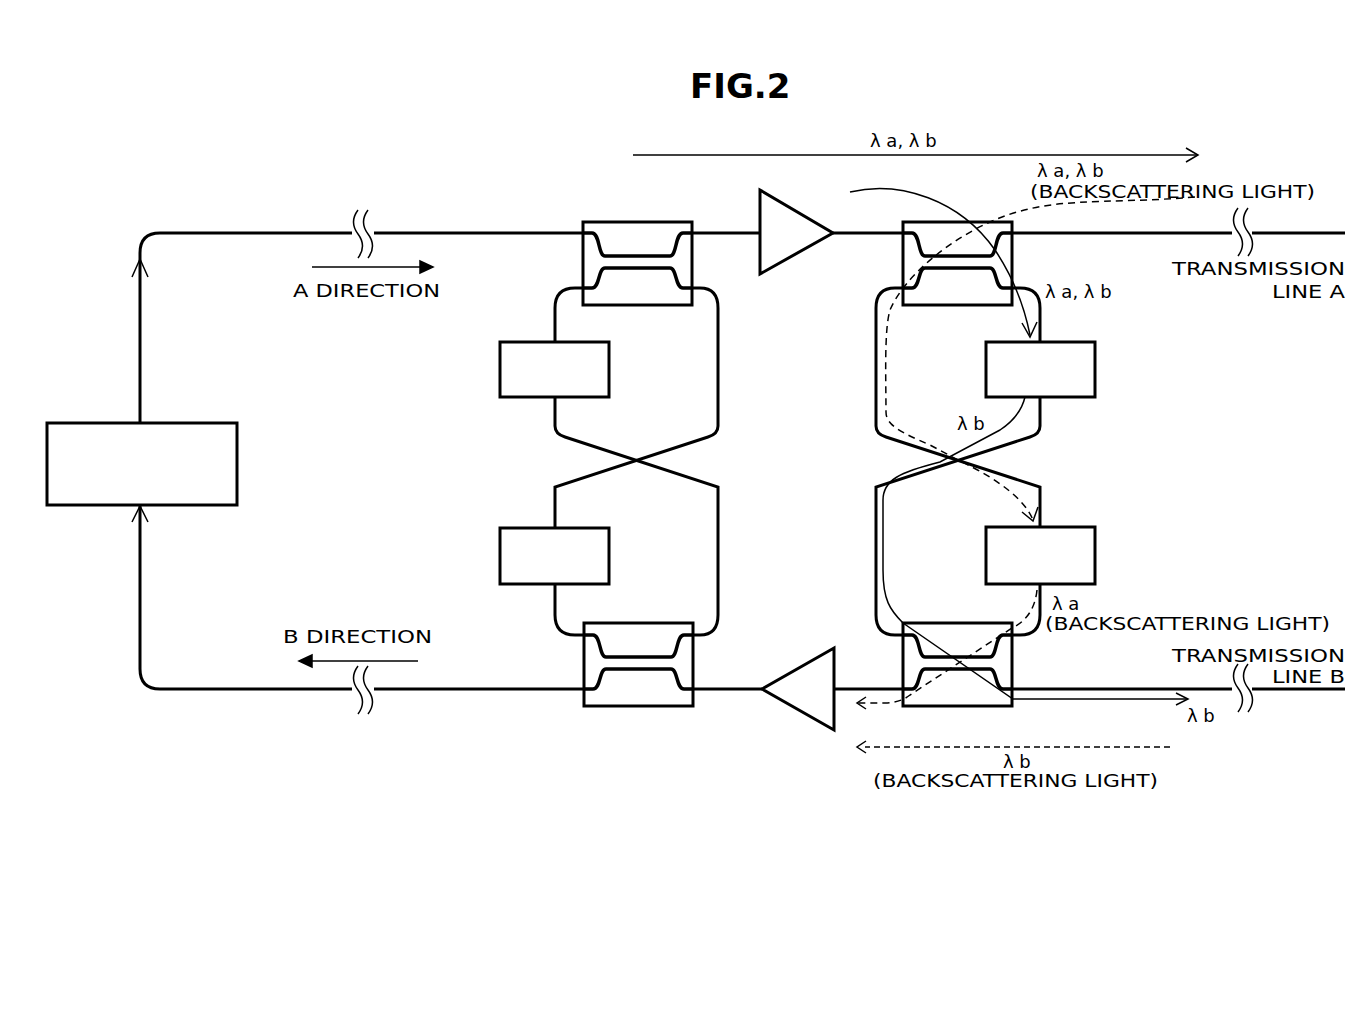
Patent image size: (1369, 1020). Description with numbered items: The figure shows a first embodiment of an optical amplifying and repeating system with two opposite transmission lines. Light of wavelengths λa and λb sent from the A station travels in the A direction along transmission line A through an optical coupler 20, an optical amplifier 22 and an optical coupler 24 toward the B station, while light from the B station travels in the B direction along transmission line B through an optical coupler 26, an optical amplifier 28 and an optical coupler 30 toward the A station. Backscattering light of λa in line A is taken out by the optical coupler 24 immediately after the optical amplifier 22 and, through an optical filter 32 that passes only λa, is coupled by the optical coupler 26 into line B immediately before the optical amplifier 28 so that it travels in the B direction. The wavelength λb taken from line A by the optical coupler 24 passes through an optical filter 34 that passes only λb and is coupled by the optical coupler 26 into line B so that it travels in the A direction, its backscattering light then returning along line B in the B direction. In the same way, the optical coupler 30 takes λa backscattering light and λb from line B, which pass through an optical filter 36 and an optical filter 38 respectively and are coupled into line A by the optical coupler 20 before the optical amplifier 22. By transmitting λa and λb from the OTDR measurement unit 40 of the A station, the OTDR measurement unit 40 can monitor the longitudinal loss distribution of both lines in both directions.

The optical coupler 20 is at (645, 216).
The optical amplifier 22 is at (806, 212).
The optical coupler 24 is at (1014, 254).
The optical coupler 26 is at (957, 622).
The optical amplifier 28 is at (791, 669).
The optical coupler 30 is at (638, 620).
The optical filter 32 is at (1096, 561).
The optical filter 34 is at (1096, 375).
The optical filter 36 is at (610, 375).
The optical filter 38 is at (610, 561).
The OTDR measurement unit 40 is at (238, 465).